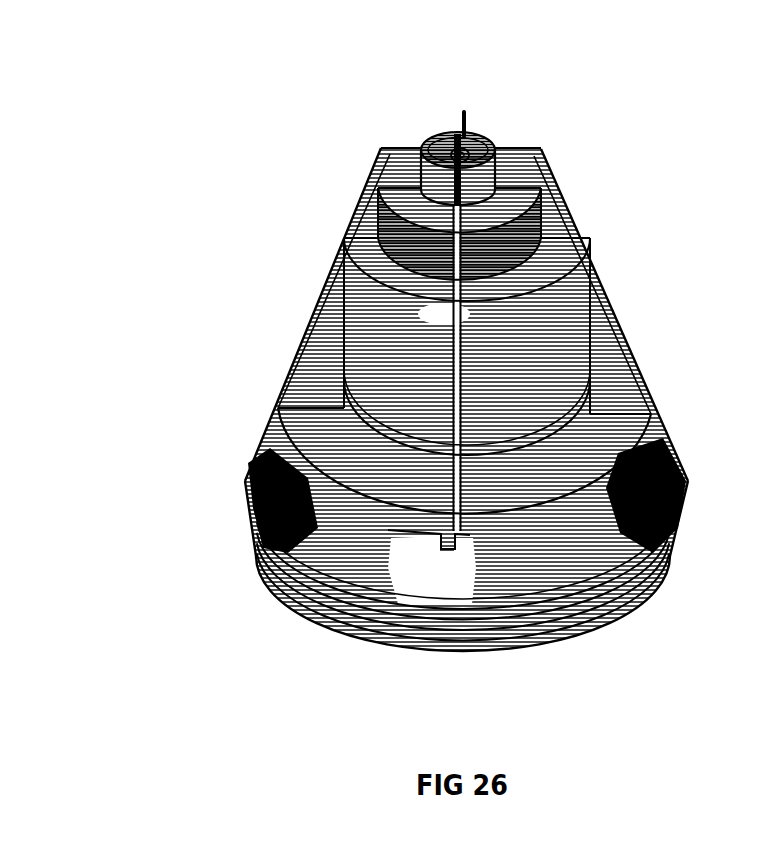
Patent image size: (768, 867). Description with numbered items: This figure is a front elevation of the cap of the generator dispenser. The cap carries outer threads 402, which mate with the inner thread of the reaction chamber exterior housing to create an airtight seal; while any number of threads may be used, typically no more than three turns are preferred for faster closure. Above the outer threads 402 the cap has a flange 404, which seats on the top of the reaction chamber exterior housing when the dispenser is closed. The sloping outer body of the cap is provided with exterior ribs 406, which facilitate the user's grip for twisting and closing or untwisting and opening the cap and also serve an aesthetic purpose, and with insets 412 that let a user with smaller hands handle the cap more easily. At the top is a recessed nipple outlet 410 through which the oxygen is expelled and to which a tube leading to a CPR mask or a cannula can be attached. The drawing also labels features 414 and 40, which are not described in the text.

The outer threads 402 is at (589, 601).
The flange 404 is at (238, 489).
The exterior ribs 406 is at (299, 337).
The recessed nipple outlet 410 is at (456, 143).
The insets 412 is at (352, 467).
The annular grooves 414 is at (488, 640).
The assembly (truncated numeral) 40 is at (570, 213).